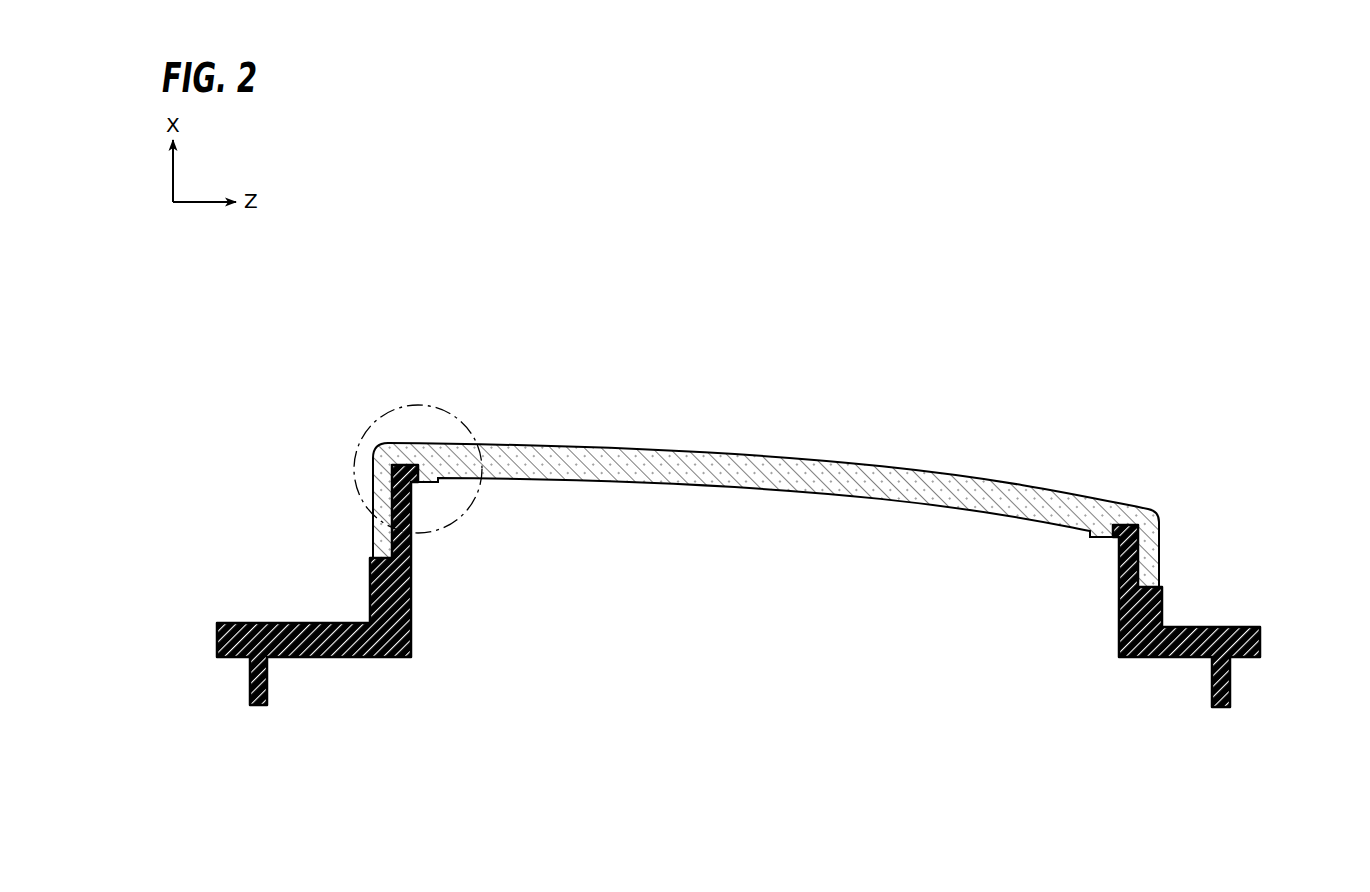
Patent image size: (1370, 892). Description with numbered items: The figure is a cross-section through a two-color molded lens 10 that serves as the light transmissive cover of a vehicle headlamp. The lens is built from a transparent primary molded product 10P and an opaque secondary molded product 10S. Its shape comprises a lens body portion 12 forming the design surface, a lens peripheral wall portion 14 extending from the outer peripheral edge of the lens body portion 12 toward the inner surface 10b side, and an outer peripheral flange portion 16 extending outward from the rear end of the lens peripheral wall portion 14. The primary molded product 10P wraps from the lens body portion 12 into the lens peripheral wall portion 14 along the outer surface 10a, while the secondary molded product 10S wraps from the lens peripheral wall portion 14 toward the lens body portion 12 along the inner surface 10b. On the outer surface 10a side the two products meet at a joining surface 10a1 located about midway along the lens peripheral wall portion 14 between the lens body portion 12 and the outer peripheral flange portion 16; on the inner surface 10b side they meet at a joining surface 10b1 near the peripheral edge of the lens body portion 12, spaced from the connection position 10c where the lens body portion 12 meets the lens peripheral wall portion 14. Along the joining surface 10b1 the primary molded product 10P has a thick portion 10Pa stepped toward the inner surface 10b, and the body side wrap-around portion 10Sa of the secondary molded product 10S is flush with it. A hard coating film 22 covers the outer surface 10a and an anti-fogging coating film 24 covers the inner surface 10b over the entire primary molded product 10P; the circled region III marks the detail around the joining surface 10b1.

The two-color molded lens 10 is at (1127, 305).
The lens body portion 12 is at (608, 457).
The outer surface 10a is at (712, 450).
The inner surface 10b is at (708, 488).
The joining surface 10a1 is at (373, 553).
The joining surface 10b1 is at (418, 470).
The connection position 10c is at (416, 484).
The primary molded product 10P is at (829, 460).
The thick portion 10Pa is at (1100, 542).
The secondary molded product 10S is at (345, 659).
The body side wrap-around portion 10Sa is at (1115, 548).
The lens peripheral wall portion 14 is at (392, 597).
The outer peripheral flange portion 16 is at (295, 625).
The hard coating film 22 is at (938, 477).
The anti-fogging coating film 24 is at (933, 510).
The detail region III is at (372, 420).